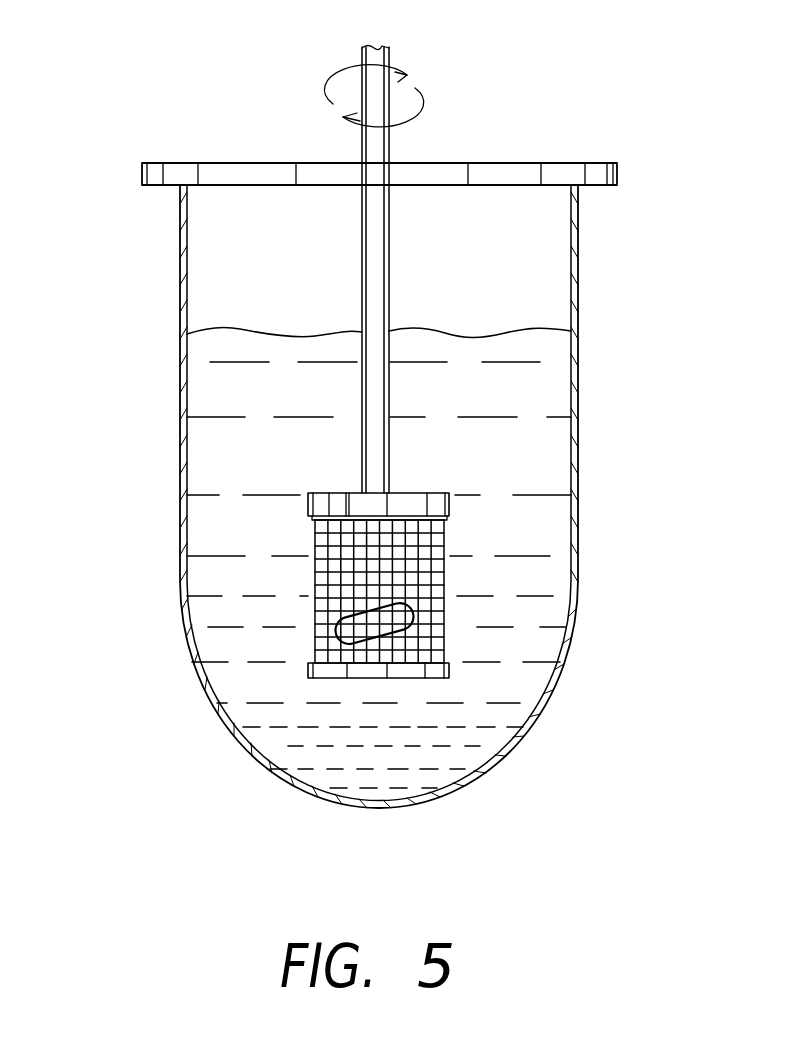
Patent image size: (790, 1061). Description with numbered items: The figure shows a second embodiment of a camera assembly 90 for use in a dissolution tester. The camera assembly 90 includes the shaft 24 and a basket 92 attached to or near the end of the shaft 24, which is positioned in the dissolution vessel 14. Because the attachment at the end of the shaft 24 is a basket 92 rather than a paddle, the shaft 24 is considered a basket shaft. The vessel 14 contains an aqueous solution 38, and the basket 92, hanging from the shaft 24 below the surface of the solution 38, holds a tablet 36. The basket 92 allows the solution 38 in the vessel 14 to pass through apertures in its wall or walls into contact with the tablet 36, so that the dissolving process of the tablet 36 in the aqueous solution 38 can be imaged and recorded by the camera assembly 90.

The camera assembly 90 is at (199, 97).
The vessel 14 is at (577, 253).
The shaft 24 is at (390, 48).
The aqueous solution 38 is at (517, 473).
The basket 92 is at (445, 590).
The tablet 36 is at (393, 634).